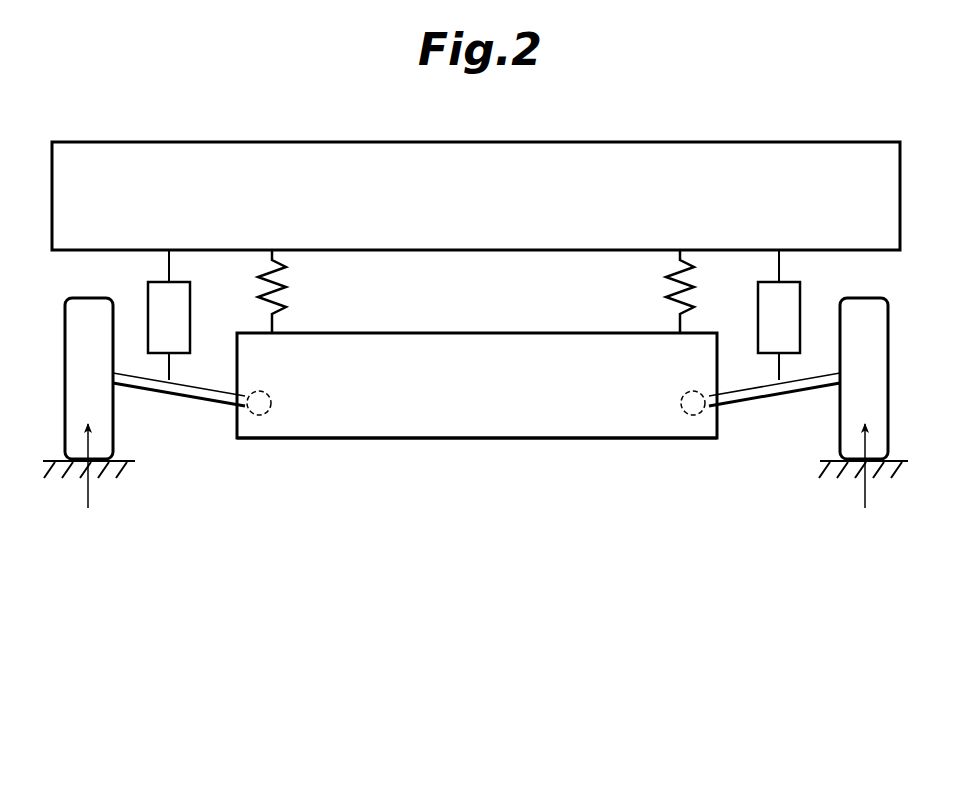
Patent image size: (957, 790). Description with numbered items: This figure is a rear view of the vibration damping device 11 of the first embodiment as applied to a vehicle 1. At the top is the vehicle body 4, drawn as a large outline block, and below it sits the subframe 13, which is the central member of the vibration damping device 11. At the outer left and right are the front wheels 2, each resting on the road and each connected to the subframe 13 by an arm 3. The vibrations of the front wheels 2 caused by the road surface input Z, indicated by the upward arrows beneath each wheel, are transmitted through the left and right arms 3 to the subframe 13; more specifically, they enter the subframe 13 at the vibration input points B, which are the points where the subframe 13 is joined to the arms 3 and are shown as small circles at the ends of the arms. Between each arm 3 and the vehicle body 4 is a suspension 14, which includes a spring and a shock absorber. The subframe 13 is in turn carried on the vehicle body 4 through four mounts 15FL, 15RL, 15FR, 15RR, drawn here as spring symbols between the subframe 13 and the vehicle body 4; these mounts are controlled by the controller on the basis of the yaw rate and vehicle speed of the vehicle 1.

The vehicle 1 is at (890, 106).
The front wheel 2 is at (65, 373).
The arm 3 is at (179, 403).
The vehicle body 4 is at (830, 142).
The vibration damping device 11 is at (405, 442).
The subframe 13 is at (541, 440).
The suspension 14 is at (148, 288).
The mount 15FL is at (348, 291).
The mount 15RL is at (282, 286).
The mount 15FR is at (594, 291).
The mount 15RR is at (670, 287).
The vibration input point B is at (268, 414).
The road surface input Z is at (476, 480).